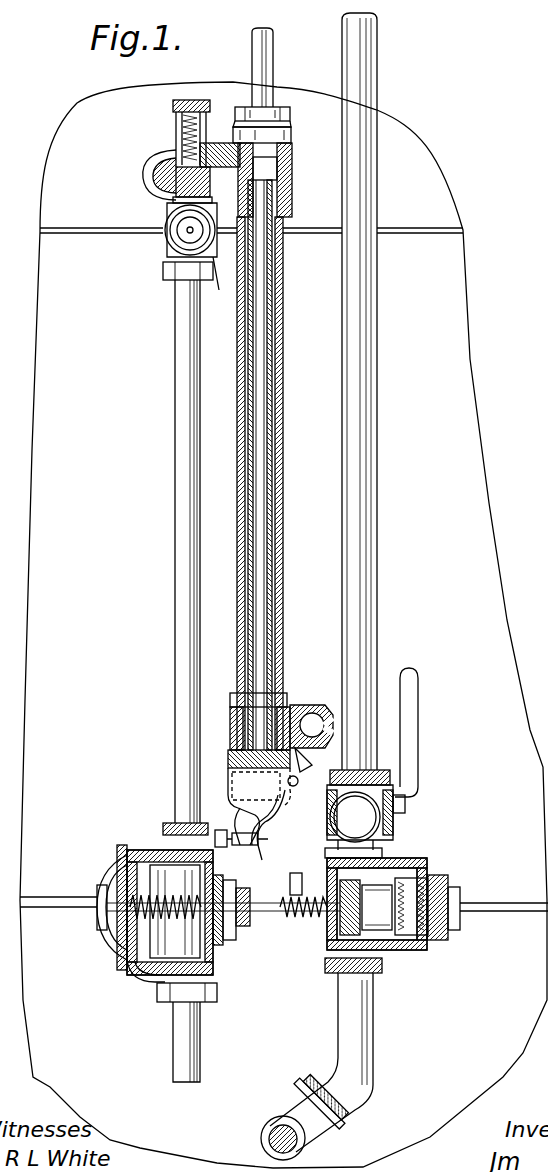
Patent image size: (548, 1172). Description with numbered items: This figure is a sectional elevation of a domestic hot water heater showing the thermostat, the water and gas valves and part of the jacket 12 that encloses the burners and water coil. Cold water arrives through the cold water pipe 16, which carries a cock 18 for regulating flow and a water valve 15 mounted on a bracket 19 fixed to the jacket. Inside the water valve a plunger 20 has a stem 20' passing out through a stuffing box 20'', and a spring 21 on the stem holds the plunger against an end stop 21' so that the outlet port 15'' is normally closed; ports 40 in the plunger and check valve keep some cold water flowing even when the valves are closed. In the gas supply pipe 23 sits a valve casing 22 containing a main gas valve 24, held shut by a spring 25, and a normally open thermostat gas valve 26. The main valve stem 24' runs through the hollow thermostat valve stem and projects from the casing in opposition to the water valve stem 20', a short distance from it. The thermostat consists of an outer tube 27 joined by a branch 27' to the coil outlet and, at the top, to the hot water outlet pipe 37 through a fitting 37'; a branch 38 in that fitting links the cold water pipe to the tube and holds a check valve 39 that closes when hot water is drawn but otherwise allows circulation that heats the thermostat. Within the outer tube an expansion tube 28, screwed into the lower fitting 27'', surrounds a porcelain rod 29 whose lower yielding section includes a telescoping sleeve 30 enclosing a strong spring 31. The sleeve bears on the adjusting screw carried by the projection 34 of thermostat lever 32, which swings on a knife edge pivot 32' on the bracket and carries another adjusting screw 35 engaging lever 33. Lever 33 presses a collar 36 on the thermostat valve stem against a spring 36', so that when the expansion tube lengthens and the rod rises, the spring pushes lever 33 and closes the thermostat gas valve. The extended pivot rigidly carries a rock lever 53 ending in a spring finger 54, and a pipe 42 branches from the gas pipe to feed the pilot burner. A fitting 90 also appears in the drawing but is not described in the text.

The jacket 12 is at (283, 625).
The water valve 15 is at (140, 910).
The outlet port 15'' is at (148, 904).
The cold water pipe 16 is at (176, 697).
The cock 18 is at (170, 252).
The bracket 19 is at (253, 943).
The plunger 20 is at (83, 907).
The stem 20' is at (263, 935).
The stuffing box 20'' is at (206, 969).
The spring 21 is at (183, 919).
The end stop 21' is at (76, 913).
The valve casing 22 is at (405, 950).
The gas supply pipe 23 is at (378, 548).
The main gas valve 24 is at (431, 890).
The stem of main gas valve 24' is at (375, 941).
The spring 25 is at (455, 888).
The thermostat gas valve 26 is at (400, 855).
The outer tube 27 is at (272, 483).
The branch 27' is at (311, 706).
The fitting 27'' is at (245, 721).
The expansion tube 28 is at (273, 476).
The porcelain rod 29 is at (260, 505).
The sleeve 30 is at (236, 755).
The spring 31 is at (300, 772).
The thermostat lever 32 is at (221, 821).
The knife edge pivot 32' is at (305, 778).
The thermostat lever 33 is at (262, 825).
The projection 34 is at (232, 770).
The adjusting screw 35 is at (250, 832).
The collar 36 is at (299, 926).
The spring 36' is at (300, 884).
The hot water outlet pipe 37 is at (279, 67).
The fitting 37' is at (276, 171).
The branch 38 is at (223, 158).
The check valve 39 is at (217, 280).
The ports 40 is at (180, 960).
The pipe 42 is at (348, 1107).
The rock lever 53 is at (395, 784).
The spring finger 54 is at (333, 742).
The packing nut 90 is at (167, 200).